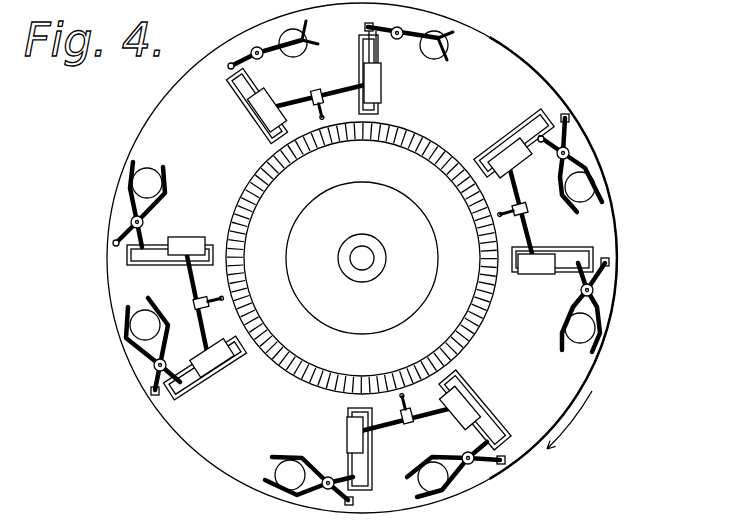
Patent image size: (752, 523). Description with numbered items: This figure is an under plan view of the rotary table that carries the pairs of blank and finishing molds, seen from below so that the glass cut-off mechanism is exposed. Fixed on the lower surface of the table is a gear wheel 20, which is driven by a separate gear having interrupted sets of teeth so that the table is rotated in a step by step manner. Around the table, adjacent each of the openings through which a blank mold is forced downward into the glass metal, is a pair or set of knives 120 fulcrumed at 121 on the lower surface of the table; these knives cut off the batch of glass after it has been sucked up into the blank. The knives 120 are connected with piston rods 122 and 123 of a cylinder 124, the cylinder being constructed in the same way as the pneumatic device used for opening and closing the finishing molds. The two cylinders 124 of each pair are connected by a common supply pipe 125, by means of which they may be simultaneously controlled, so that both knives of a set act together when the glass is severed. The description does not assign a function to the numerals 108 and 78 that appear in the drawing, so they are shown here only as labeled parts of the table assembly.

The rotary disk 108 is at (490, 57).
The gear wheel 20 is at (467, 346).
The link connection 78 is at (116, 246).
The knives 120 is at (590, 173).
The fulcrum 121 is at (567, 150).
The piston rod 122 is at (525, 120).
The piston rod 123 is at (536, 128).
The cylinder 124 is at (482, 163).
The common supply pipe 125 is at (525, 221).